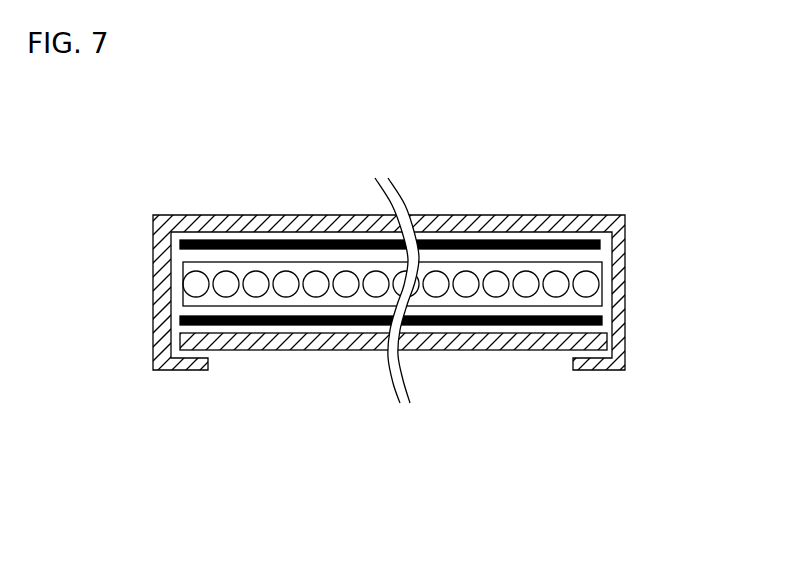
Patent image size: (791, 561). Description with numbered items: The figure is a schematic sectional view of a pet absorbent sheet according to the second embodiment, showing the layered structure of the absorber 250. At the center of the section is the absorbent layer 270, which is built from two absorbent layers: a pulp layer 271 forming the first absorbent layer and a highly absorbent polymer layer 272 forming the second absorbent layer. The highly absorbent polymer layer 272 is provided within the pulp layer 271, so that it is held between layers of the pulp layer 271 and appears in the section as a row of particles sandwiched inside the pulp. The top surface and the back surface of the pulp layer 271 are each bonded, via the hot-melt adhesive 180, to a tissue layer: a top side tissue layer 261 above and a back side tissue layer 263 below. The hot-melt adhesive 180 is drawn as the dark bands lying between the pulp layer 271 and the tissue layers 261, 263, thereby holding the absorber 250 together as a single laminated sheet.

The absorber 250 is at (395, 304).
The top side tissue layer 261 is at (262, 215).
The back side tissue layer 263 is at (318, 350).
The hot-melt adhesive 180 is at (531, 240).
The absorbent layer 270 is at (483, 260).
The pulp layer 271 is at (595, 262).
The highly absorbent polymer layer 272 is at (555, 278).